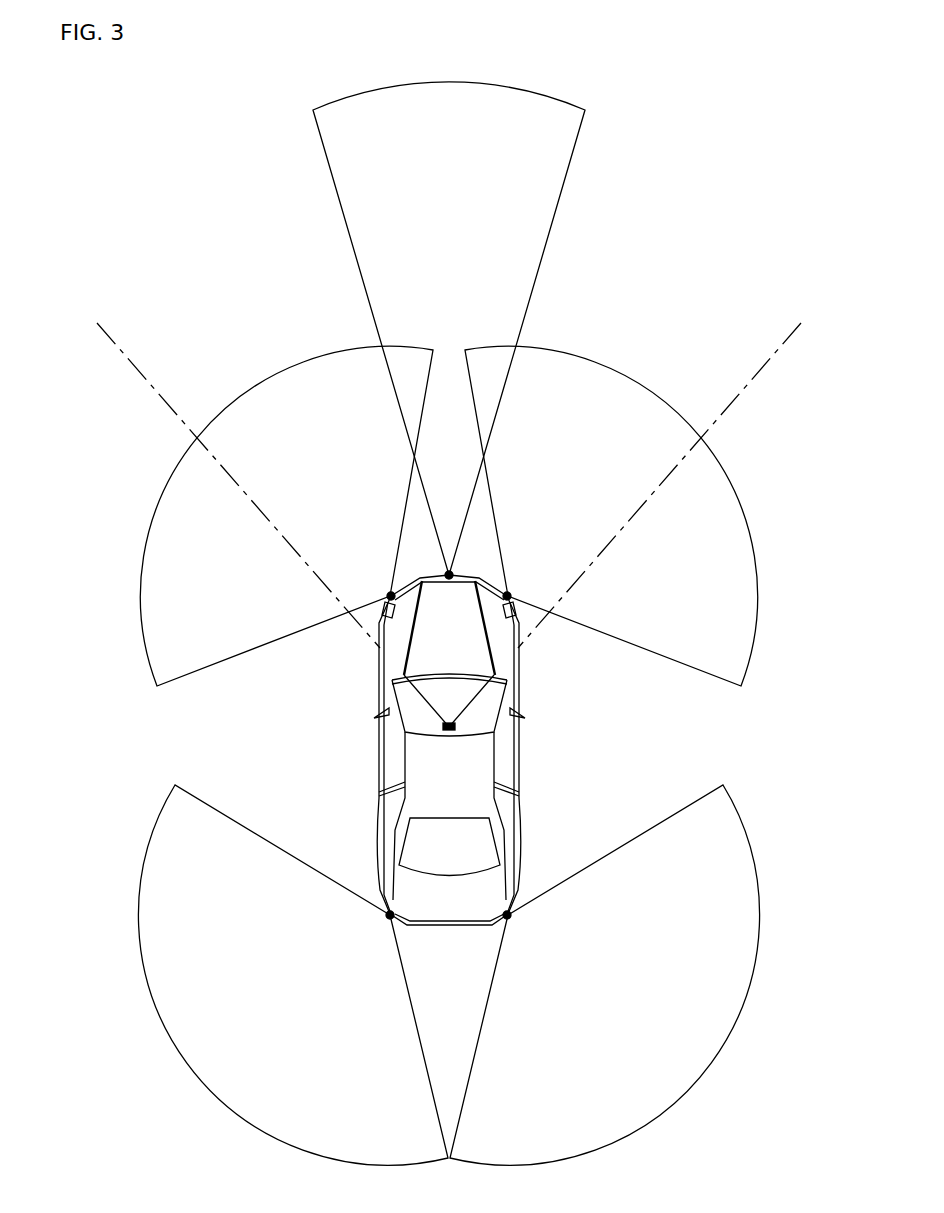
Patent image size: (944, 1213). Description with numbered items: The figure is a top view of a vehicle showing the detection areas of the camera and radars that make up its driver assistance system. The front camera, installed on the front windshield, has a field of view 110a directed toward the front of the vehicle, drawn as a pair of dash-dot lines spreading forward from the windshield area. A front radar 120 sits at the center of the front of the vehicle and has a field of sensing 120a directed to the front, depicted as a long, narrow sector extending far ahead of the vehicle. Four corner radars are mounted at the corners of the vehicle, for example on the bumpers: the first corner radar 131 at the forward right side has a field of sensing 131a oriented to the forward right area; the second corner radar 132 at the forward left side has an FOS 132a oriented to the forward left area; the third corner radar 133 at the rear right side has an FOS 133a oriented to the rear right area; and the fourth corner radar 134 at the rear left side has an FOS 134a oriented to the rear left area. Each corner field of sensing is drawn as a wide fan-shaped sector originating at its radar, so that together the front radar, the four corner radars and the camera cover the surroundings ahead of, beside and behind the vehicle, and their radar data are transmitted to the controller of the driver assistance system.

The field of sensing 120a is at (533, 214).
The FOS 132a is at (262, 398).
The field of sensing (FOS) 131a is at (639, 398).
The FOS 134a is at (190, 1050).
The FOS 133a is at (708, 1050).
The field of view 110a is at (760, 368).
The front radar 120 is at (452, 572).
The second corner radar 132 is at (389, 594).
The first corner radar 131 is at (509, 594).
The fourth corner radar 134 is at (388, 918).
The third corner radar 133 is at (509, 918).